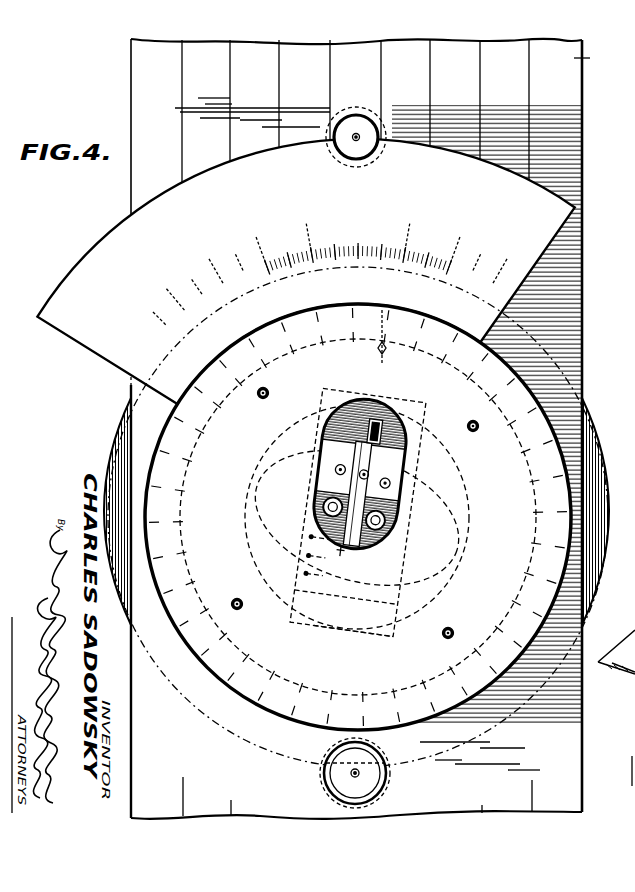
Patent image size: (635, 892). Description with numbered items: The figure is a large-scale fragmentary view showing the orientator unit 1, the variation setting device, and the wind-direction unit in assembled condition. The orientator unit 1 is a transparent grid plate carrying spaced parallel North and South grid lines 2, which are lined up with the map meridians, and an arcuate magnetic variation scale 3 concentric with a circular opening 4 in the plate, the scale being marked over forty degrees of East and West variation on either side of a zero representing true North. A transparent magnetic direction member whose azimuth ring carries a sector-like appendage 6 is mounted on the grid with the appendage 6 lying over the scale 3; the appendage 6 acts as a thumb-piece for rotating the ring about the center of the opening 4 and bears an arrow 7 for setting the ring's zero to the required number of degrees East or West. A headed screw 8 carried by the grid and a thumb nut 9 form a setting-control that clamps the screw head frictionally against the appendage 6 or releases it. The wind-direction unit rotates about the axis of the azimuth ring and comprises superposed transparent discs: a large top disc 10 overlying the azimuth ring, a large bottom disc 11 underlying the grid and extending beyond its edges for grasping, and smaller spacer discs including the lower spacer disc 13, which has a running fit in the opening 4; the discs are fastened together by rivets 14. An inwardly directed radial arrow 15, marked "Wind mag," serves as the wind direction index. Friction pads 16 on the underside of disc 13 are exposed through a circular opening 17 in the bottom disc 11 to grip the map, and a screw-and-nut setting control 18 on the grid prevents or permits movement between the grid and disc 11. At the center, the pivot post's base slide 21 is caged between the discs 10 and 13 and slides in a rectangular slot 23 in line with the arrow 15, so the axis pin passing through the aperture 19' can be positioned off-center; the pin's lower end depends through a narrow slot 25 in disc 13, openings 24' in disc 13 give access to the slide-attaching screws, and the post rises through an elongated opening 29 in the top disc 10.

The orientator unit 1 is at (140, 61).
The North and South grid lines 2 is at (330, 69).
The magnetic variation scale 3 is at (207, 197).
The circular opening 4 is at (222, 472).
The sector-like appendage 6 is at (97, 248).
The arrow 7 is at (305, 272).
The headed screw 8 is at (356, 126).
The thumb nut 9 is at (381, 122).
The top disc 10 is at (166, 439).
The bottom disc 11 is at (124, 418).
The lower spacer disc 13 is at (360, 470).
The rivets 14 is at (474, 432).
The radial arrow 15 is at (373, 393).
The friction pads 16 is at (249, 523).
The circular opening 17 is at (462, 522).
The setting control 18 is at (330, 782).
The aperture 19' is at (357, 493).
The base slide 21 is at (328, 463).
The rectangular slot 23 is at (378, 634).
The openings 24' is at (354, 513).
The narrow slot 25 is at (375, 431).
The opening 29 is at (400, 432).